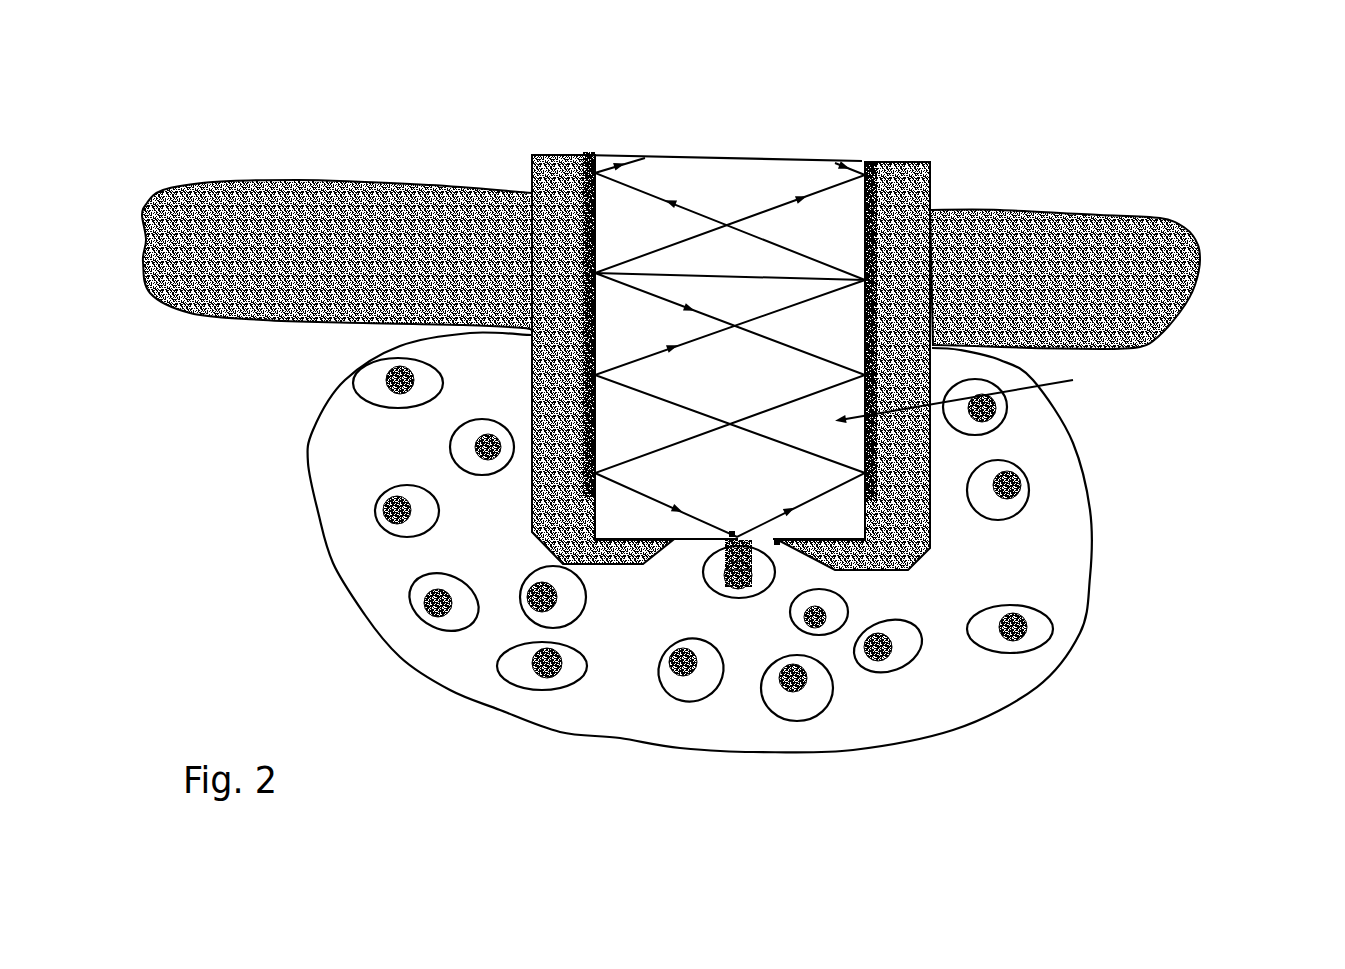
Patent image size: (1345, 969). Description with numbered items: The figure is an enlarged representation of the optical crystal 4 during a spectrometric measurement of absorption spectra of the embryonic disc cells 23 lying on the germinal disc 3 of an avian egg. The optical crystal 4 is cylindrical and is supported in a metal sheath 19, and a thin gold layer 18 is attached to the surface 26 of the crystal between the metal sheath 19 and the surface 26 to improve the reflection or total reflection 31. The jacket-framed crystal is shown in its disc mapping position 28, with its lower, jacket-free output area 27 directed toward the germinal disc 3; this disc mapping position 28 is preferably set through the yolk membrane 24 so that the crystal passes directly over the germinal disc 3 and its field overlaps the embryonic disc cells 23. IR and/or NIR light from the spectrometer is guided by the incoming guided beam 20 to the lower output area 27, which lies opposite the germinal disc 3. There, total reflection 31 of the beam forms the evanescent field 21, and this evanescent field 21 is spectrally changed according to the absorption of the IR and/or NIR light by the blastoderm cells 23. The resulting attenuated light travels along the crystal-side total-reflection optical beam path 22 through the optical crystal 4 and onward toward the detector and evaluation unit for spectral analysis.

The germinal disc 3 is at (1070, 494).
The optical crystal 4 is at (738, 173).
The thin gold layer 18 is at (870, 160).
The metal sheath 19 is at (923, 162).
The incoming guided beam 20 is at (778, 207).
The evanescent field 21 is at (740, 560).
The total-reflection optical beam path 22 is at (647, 193).
The embryonic disc cells 23 is at (1023, 473).
The yolk membrane 24 is at (1130, 312).
The surface of the crystal 26 is at (587, 415).
The lower output area 27 is at (777, 545).
The disc mapping position 28 is at (976, 393).
The total reflection 31 is at (730, 534).